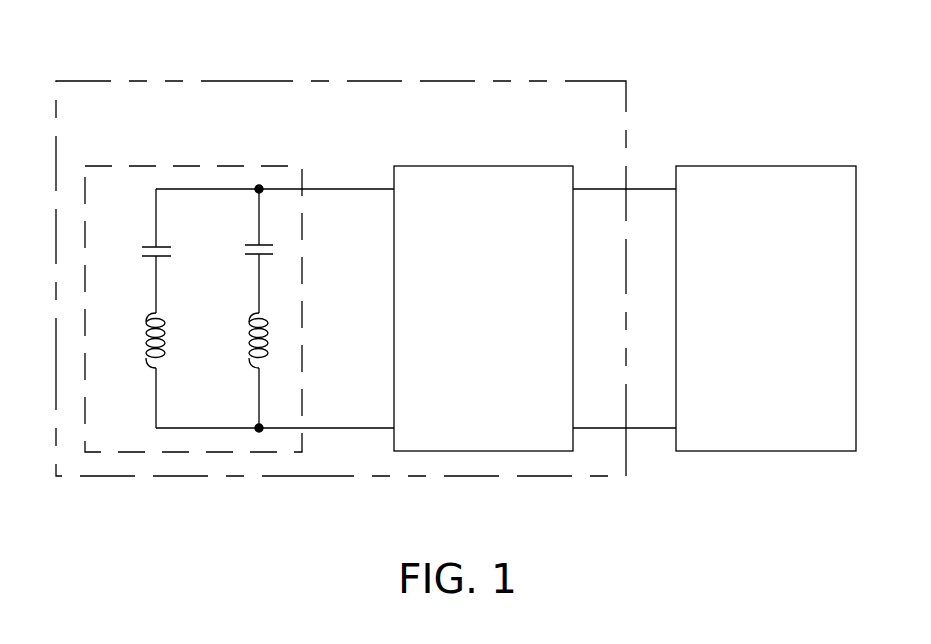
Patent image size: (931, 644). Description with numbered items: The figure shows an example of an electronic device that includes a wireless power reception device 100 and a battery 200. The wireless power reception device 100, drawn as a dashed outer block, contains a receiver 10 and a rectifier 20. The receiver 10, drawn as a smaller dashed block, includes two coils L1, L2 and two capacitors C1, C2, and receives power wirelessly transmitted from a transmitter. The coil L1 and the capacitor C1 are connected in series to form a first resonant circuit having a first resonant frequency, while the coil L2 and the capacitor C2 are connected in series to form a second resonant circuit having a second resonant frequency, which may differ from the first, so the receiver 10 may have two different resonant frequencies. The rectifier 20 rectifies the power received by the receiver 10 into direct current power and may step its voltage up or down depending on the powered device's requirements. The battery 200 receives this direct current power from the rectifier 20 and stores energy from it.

The wireless power reception device 100 is at (583, 81).
The receiver 10 is at (239, 275).
The rectifier 20 is at (535, 166).
The battery 200 is at (813, 166).
The capacitor C1 is at (139, 253).
The capacitor C2 is at (242, 253).
The coil L1 is at (136, 340).
The coil L2 is at (239, 340).